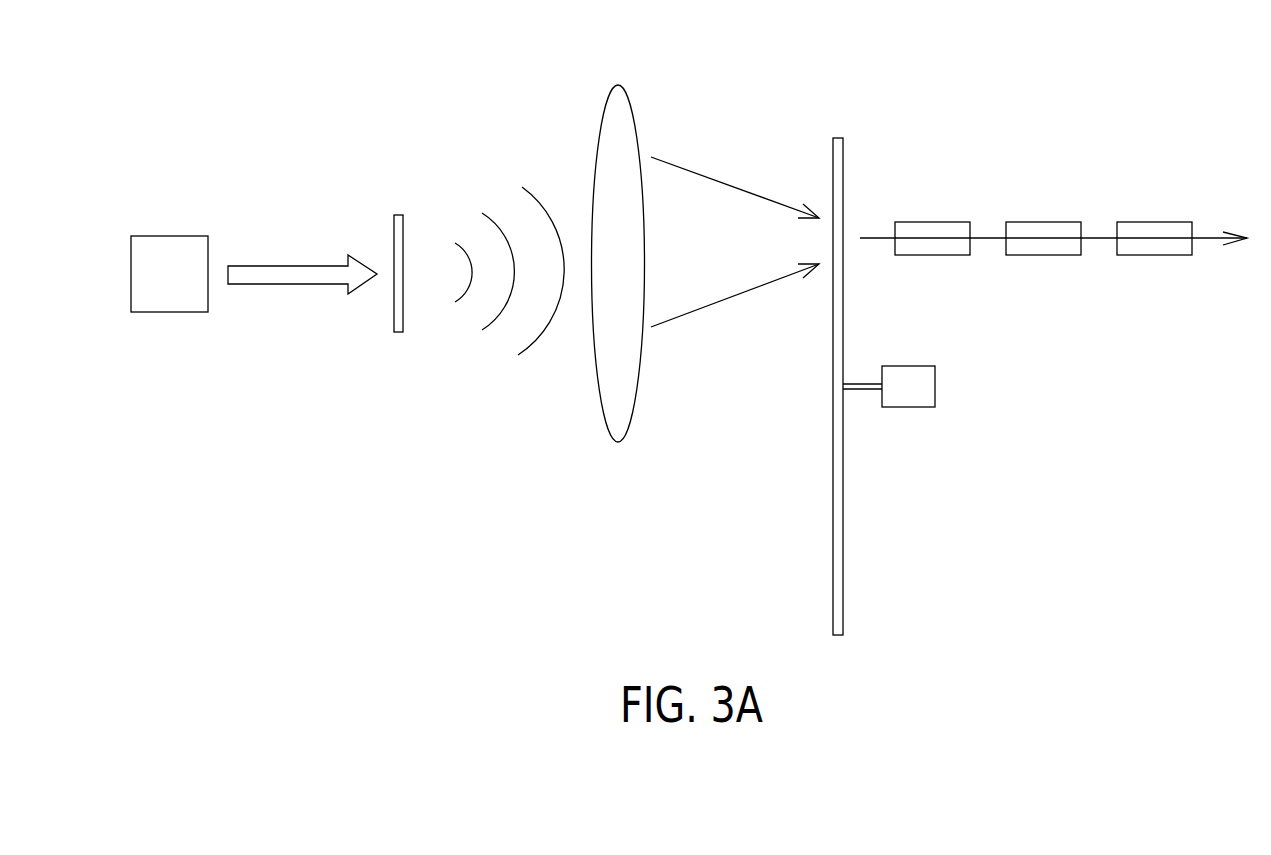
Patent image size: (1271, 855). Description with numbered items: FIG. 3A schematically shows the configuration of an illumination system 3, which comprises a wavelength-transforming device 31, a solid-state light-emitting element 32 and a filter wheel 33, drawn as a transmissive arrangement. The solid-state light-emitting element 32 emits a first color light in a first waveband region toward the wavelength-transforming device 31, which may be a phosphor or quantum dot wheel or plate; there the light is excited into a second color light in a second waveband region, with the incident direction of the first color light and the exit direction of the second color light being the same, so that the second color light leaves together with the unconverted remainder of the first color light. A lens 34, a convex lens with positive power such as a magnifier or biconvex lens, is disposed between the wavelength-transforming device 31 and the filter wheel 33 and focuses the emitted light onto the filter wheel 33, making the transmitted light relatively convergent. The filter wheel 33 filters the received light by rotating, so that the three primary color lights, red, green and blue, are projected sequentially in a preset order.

The illumination system 3 is at (264, 103).
The wavelength-transforming device 31 is at (390, 338).
The solid-state light-emitting element 32 is at (169, 236).
The filter wheel 33 is at (838, 137).
The lens 34 is at (618, 85).